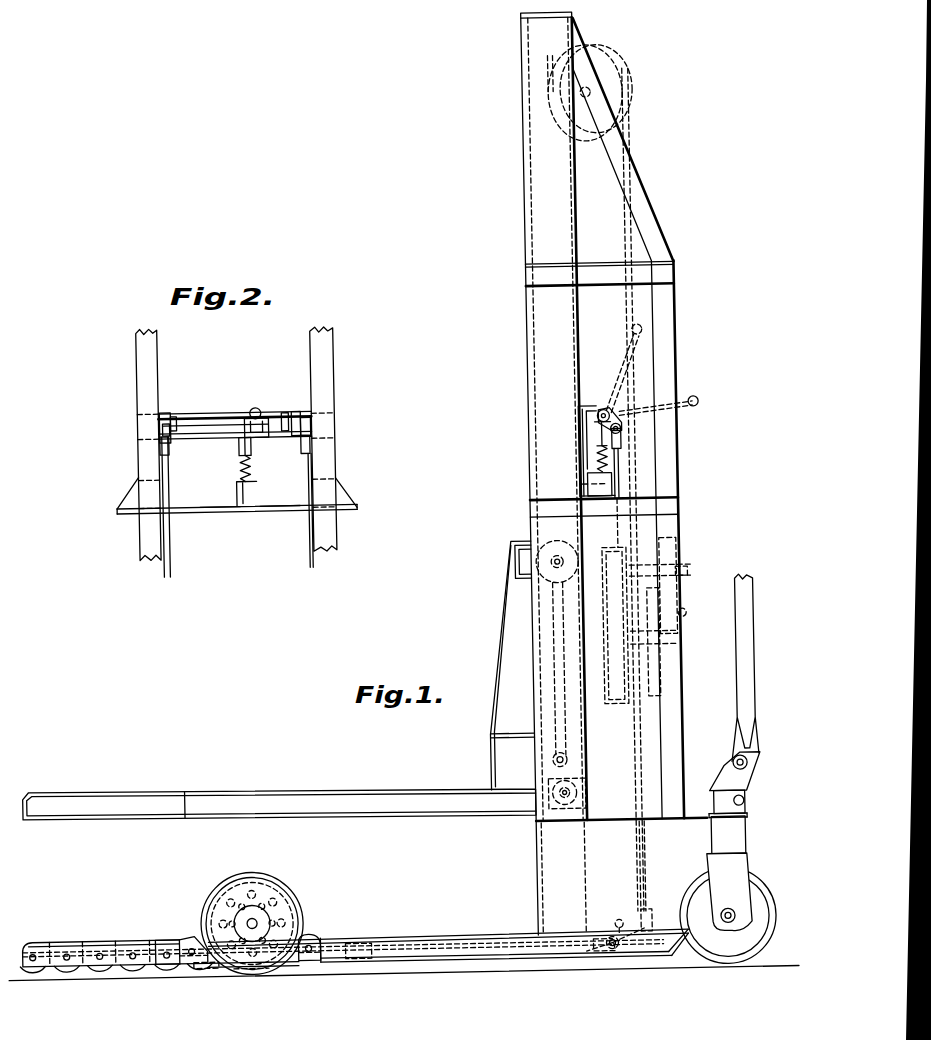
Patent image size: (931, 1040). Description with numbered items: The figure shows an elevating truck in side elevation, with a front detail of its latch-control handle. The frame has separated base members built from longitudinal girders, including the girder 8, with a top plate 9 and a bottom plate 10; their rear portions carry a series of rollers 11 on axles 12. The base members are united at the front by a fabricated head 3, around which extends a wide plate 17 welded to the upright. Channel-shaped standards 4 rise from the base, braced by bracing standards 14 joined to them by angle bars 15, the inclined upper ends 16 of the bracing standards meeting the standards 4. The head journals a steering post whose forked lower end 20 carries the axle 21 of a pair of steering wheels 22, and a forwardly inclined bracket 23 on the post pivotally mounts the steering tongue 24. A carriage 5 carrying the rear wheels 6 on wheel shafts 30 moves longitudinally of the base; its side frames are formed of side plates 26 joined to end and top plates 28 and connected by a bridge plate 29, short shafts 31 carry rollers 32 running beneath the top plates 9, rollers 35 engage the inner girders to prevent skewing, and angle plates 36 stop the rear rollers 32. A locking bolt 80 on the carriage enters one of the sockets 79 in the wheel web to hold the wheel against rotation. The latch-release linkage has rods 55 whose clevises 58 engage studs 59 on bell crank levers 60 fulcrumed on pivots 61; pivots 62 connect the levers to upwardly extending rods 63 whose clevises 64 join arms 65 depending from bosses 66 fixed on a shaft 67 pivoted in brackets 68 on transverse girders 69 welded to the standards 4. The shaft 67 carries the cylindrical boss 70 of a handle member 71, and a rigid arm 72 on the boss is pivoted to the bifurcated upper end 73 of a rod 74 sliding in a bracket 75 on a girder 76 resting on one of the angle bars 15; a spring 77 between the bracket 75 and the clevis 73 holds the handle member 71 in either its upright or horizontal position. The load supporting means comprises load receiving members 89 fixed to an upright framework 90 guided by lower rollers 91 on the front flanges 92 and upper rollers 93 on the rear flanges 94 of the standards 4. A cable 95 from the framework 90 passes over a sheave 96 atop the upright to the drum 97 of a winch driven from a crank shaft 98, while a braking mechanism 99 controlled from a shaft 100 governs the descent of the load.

In FIG. 1, the head construction 3 is at (688, 822).
In FIG. 1, the standards 4 is at (525, 220).
In FIG. 2, the standards 4 is at (138, 380).
In FIG. 1, the carriage 5 is at (300, 960).
In FIG. 1, the rear wheels 6 is at (215, 895).
In FIG. 1, the girder 8 is at (415, 956).
In FIG. 1, the top plate 9 is at (395, 940).
In FIG. 1, the bottom plate 10 is at (395, 962).
In FIG. 1, the rollers 11 is at (135, 972).
In FIG. 1, the axles 12 is at (100, 955).
In FIG. 1, the bracing standards 14 is at (670, 480).
In FIG. 1, the angle bars 15 is at (612, 273).
In FIG. 2, the angle bars 15 is at (130, 512).
In FIG. 1, the upper ends 16 is at (645, 218).
In FIG. 1, the wide plate 17 is at (610, 825).
In FIG. 1, the forked lower end 20 is at (740, 860).
In FIG. 1, the axle 21 is at (735, 912).
In FIG. 1, the steering wheels 22 is at (775, 950).
In FIG. 1, the bracket 23 is at (727, 772).
In FIG. 1, the steering tongue 24 is at (746, 692).
In FIG. 1, the side plate 26 is at (305, 932).
In FIG. 1, the end and top plates 28 is at (318, 960).
In FIG. 1, the bridge plate 29 is at (210, 935).
In FIG. 1, the wheel shafts 30 is at (249, 915).
In FIG. 1, the short shafts 31 is at (318, 942).
In FIG. 1, the rollers 32 is at (313, 940).
In FIG. 1, the rollers 35 is at (365, 945).
In FIG. 1, the angle plates 36 is at (165, 950).
In FIG. 1, the rods 55 is at (478, 950).
In FIG. 1, the clevises 58 is at (603, 950).
In FIG. 1, the studs 59 is at (620, 950).
In FIG. 1, the bell crank levers 60 is at (637, 945).
In FIG. 1, the pivots 61 is at (620, 915).
In FIG. 1, the pivots 62 is at (648, 922).
In FIG. 1, the rods 63 is at (627, 545).
In FIG. 2, the rods 63 is at (162, 568).
In FIG. 1, the clevises 64 is at (622, 440).
In FIG. 2, the clevises 64 is at (160, 445).
In FIG. 1, the arms 65 is at (622, 413).
In FIG. 2, the arms 65 is at (163, 424).
In FIG. 2, the bosses 66 is at (297, 411).
In FIG. 1, the shaft 67 is at (593, 415).
In FIG. 2, the shaft 67 is at (212, 415).
In FIG. 1, the brackets 68 is at (605, 410).
In FIG. 2, the brackets 68 is at (178, 418).
In FIG. 1, the transverse girders 69 is at (593, 405).
In FIG. 2, the transverse girders 69 is at (168, 408).
In FIG. 2, the cylindrical boss 70 is at (258, 434).
In FIG. 1, the handle member 71 is at (647, 332).
In FIG. 2, the handle member 71 is at (254, 410).
In FIG. 1, the arm 72 is at (596, 423).
In FIG. 2, the arm 72 is at (243, 440).
In FIG. 1, the bifurcated upper end 73 is at (600, 445).
In FIG. 2, the bifurcated upper end 73 is at (240, 460).
In FIG. 1, the rod 74 is at (585, 497).
In FIG. 2, the rod 74 is at (250, 488).
In FIG. 1, the bracket 75 is at (620, 480).
In FIG. 2, the bracket 75 is at (228, 499).
In FIG. 1, the girder 76 is at (595, 498).
In FIG. 2, the girder 76 is at (285, 503).
In FIG. 1, the spring 77 is at (598, 465).
In FIG. 2, the spring 77 is at (240, 472).
In FIG. 1, the sockets 79 is at (275, 900).
In FIG. 1, the locking bolt 80 is at (245, 966).
In FIG. 1, the load receiving members 89 is at (310, 790).
In FIG. 1, the upright framework 90 is at (493, 690).
In FIG. 1, the rollers 91 is at (572, 785).
In FIG. 1, the front flanges 92 is at (568, 758).
In FIG. 1, the rollers 93 is at (540, 585).
In FIG. 1, the rear flanges 94 is at (548, 622).
In FIG. 1, the cable 95 is at (628, 222).
In FIG. 1, the sheave 96 is at (612, 78).
In FIG. 1, the drum 97 is at (667, 612).
In FIG. 1, the shaft 98 is at (690, 571).
In FIG. 1, the braking mechanism 99 is at (680, 585).
In FIG. 1, the shaft 100 is at (684, 616).